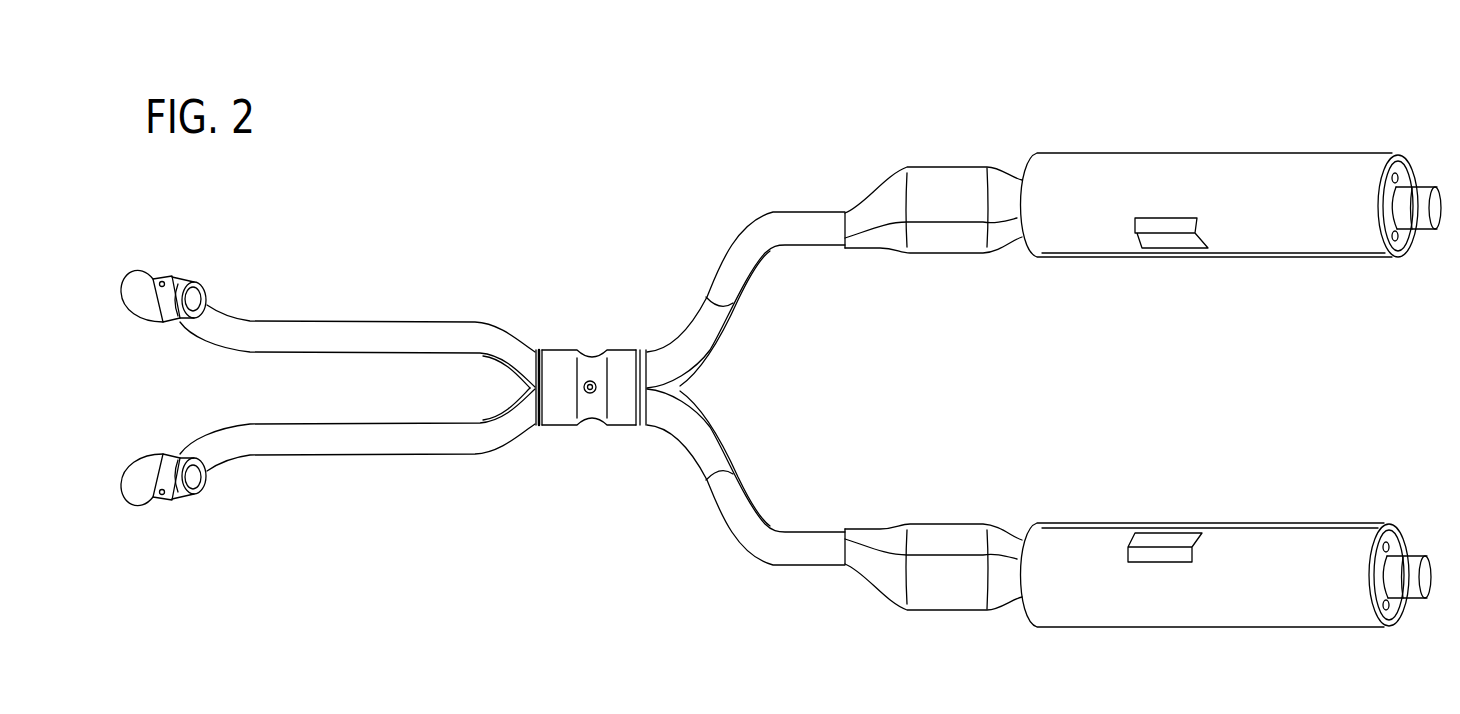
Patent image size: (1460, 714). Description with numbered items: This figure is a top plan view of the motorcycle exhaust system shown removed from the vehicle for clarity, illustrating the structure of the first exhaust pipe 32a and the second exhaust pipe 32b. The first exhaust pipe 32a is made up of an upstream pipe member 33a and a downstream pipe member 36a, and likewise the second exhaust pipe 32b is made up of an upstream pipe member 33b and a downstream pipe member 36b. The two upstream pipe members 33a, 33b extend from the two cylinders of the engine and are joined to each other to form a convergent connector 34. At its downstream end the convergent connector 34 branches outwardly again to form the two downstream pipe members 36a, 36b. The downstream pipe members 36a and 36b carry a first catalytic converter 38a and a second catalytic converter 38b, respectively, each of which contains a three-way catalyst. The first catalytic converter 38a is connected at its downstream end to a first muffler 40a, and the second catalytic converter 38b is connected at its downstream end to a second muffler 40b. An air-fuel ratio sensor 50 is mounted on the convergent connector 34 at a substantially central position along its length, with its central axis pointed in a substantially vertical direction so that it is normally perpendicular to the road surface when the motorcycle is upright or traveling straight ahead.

The first exhaust pipe 32a is at (392, 321).
The second exhaust pipe 32b is at (392, 455).
The upstream pipe member 33a is at (288, 328).
The upstream pipe member 33b is at (285, 445).
The convergent connector 34 is at (590, 403).
The air-fuel ratio sensor 50 is at (588, 378).
The downstream pipe member 36a is at (700, 453).
The downstream pipe member 36b is at (700, 322).
The first catalytic converter 38a is at (927, 590).
The second catalytic converter 38b is at (935, 188).
The first muffler 40a is at (1153, 603).
The second muffler 40b is at (1162, 178).